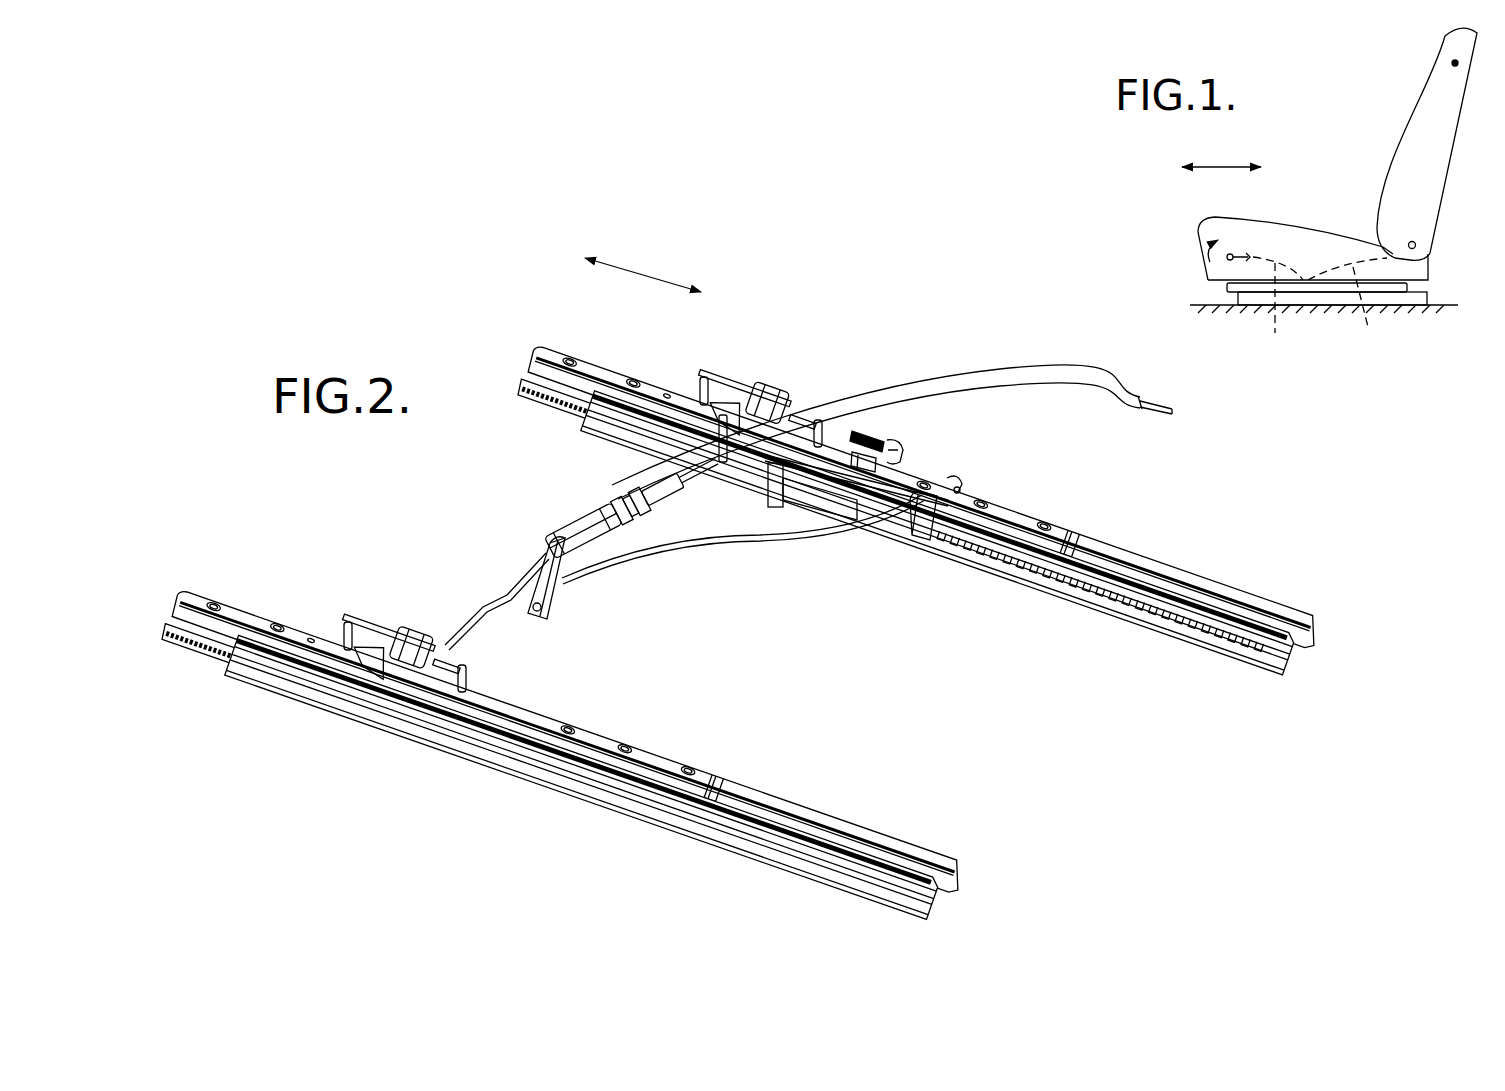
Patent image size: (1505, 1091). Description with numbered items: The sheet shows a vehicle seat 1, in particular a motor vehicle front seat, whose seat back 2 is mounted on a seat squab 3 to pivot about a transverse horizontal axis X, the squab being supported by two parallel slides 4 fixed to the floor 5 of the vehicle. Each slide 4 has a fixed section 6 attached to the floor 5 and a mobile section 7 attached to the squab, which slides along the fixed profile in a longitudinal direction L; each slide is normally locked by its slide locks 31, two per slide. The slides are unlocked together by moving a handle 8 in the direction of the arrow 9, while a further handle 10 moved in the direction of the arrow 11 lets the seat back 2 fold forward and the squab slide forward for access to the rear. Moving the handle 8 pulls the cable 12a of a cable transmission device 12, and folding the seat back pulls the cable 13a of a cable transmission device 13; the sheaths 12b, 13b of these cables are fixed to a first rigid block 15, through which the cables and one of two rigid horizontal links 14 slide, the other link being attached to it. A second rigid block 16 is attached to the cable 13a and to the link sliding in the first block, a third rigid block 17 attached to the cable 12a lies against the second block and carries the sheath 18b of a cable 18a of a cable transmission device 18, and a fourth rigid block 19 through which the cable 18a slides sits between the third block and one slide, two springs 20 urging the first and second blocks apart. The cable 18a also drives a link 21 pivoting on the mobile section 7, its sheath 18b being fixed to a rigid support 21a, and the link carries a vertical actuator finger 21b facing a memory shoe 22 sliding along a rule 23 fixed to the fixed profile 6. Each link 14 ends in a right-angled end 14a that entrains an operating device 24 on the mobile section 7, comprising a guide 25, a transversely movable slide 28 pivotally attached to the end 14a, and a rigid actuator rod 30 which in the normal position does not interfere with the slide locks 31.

In FIG. 1, the vehicle seat 1 is at (1345, 190).
In FIG. 1, the seat back 2 is at (1433, 153).
In FIG. 1, the seat squab 3 is at (1283, 233).
In FIG. 1, the slide 4 is at (1435, 277).
In FIG. 2, the slide 4 is at (1320, 658).
In FIG. 1, the floor 5 is at (1448, 307).
In FIG. 1, the fixed section 6 is at (1313, 303).
In FIG. 2, the fixed section 6 is at (598, 415).
In FIG. 1, the mobile section 7 is at (1228, 287).
In FIG. 2, the mobile section 7 is at (558, 352).
In FIG. 1, the handle 8 is at (1233, 254).
In FIG. 1, the arrow 9 is at (1203, 245).
In FIG. 1, the handle 10 is at (1450, 63).
In FIG. 1, the arrow 11 is at (1481, 55).
In FIG. 1, the cable transmission device 12 is at (1274, 316).
In FIG. 2, the cable transmission device 12 is at (1107, 412).
In FIG. 2, the cable 12a is at (1148, 415).
In FIG. 2, the sheath 12b is at (1046, 388).
In FIG. 1, the cable transmission device 13 is at (1371, 313).
In FIG. 2, the cable transmission device 13 is at (1042, 364).
In FIG. 2, the cable 13a is at (1144, 403).
In FIG. 2, the sheath 13b is at (962, 372).
In FIG. 2, the rigid horizontal link 14 is at (535, 566).
In FIG. 2, the right-angled end 14a is at (722, 420).
In FIG. 2, the first rigid block 15 is at (663, 513).
In FIG. 2, the second rigid block 16 is at (617, 527).
In FIG. 2, the third rigid block 17 is at (565, 537).
In FIG. 2, the cable transmission device 18 is at (862, 535).
In FIG. 2, the cable 18a is at (945, 488).
In FIG. 2, the sheath 18b is at (815, 535).
In FIG. 2, the fourth rigid block 19 is at (552, 606).
In FIG. 2, the springs 20 is at (636, 498).
In FIG. 2, the link 21 is at (912, 481).
In FIG. 2, the rigid support 21a is at (920, 540).
In FIG. 2, the vertical actuator finger 21b is at (773, 507).
In FIG. 2, the memory shoe 22 is at (807, 497).
In FIG. 2, the rule 23 is at (1080, 600).
In FIG. 2, the operating device 24 is at (780, 388).
In FIG. 2, the guide 25 is at (730, 408).
In FIG. 2, the slide 28 is at (760, 386).
In FIG. 2, the rigid actuator rod 30 is at (740, 386).
In FIG. 2, the slide locks 31 is at (699, 382).
In FIG. 1, the transverse horizontal axis X is at (1415, 243).
In FIG. 1, the longitudinal direction L is at (1221, 151).
In FIG. 2, the longitudinal direction L is at (643, 266).